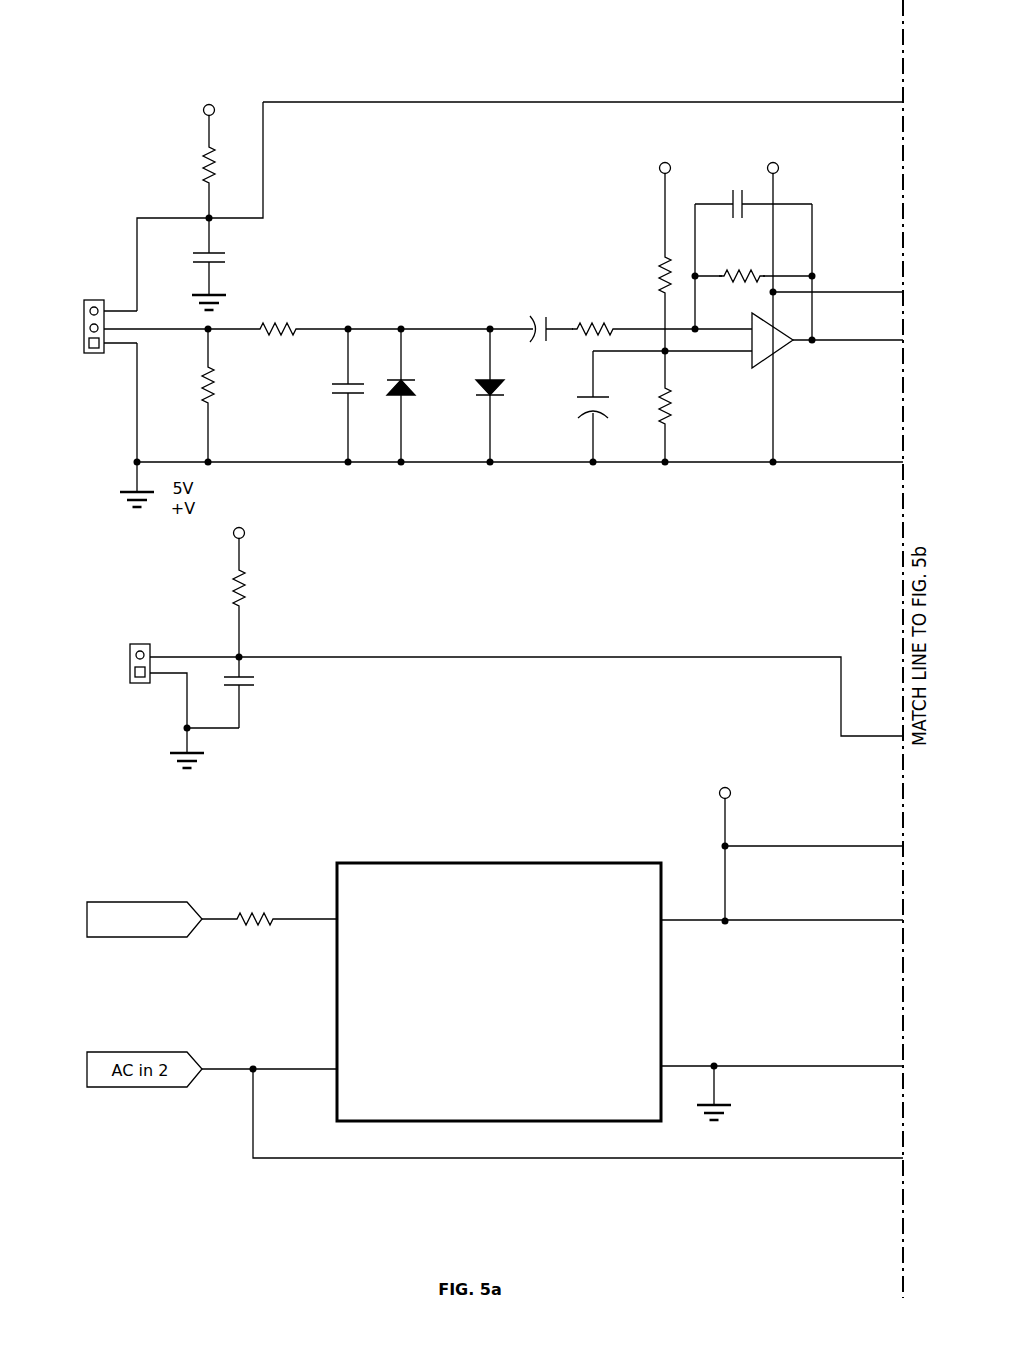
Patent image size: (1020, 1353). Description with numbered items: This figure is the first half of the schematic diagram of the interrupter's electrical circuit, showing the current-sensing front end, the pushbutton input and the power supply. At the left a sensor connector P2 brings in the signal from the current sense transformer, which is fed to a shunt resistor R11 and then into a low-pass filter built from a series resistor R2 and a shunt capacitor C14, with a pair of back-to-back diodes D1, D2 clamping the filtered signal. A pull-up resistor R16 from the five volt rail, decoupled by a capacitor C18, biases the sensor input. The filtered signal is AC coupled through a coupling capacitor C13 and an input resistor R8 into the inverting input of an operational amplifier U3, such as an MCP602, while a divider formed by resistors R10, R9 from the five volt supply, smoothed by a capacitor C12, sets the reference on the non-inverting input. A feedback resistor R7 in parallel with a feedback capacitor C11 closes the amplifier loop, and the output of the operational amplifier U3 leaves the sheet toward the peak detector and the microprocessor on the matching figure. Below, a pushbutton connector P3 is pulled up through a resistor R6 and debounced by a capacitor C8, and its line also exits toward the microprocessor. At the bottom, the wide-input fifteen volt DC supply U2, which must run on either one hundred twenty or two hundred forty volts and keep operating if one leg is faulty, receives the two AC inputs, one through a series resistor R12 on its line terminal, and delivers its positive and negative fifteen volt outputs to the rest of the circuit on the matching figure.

The resistor 10K R16 is at (192, 137).
The capacitor .1uF C18 is at (187, 264).
The sensor connector P2 is at (157, 303).
The shunt resistor R11 is at (226, 396).
The resistor 2.7K R2 is at (301, 308).
The capacitor .1uF C14 is at (344, 396).
The optically-isolated circuit diode D1 is at (438, 396).
The diode 1N4148 D2 is at (495, 396).
The capacitor 6.8uF C13 is at (544, 309).
The resistor 10K R8 is at (662, 306).
The capacitor 5.8uF C12 is at (641, 407).
The resistor 10K R10 is at (648, 234).
The resistor 10K R9 is at (681, 408).
The capacitor 1000uF C11 is at (794, 291).
The resistor 470K R7 is at (754, 272).
The operational amplifier U3 is at (827, 344).
The resistor 1k R6 is at (258, 593).
The pushbutton P3 is at (516, 679).
The capacitor .1uF C8 is at (262, 692).
The 15 volt DC supply U2 is at (620, 947).
The resistor 75 ohm R12 is at (212, 903).